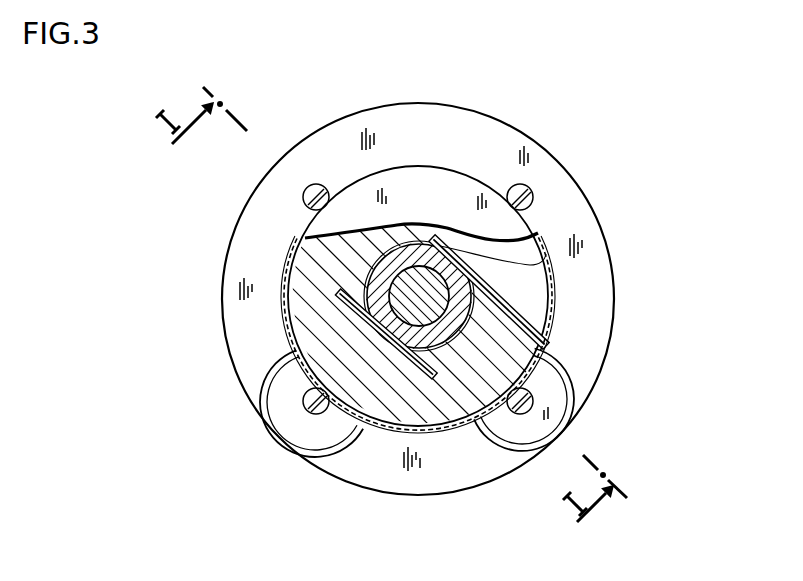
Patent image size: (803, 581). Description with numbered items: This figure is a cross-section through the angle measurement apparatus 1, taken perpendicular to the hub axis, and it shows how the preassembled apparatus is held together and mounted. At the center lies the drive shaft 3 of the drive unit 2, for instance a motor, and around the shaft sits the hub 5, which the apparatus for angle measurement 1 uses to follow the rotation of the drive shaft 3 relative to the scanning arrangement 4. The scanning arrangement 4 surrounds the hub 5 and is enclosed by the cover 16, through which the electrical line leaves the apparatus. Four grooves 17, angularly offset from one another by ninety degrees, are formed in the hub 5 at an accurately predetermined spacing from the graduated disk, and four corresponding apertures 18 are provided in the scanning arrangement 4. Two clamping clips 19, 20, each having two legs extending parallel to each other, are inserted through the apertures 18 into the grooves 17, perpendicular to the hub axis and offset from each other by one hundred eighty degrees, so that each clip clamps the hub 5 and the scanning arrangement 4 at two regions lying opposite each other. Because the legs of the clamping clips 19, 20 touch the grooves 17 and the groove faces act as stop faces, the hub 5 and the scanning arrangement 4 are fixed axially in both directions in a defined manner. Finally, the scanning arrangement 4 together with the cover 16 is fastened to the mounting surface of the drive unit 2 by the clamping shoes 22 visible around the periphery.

The apparatus for angle measurement 1 is at (585, 264).
The drive unit 2 is at (590, 293).
The drive shaft 3 is at (437, 298).
The scanning arrangement 4 is at (488, 300).
The hub 5 is at (447, 400).
The cover 16 is at (572, 384).
The grooves 17 is at (548, 243).
The apertures 18 is at (535, 258).
The clamping clip 19 is at (258, 388).
The clamping clip 20 is at (530, 452).
The clamping shoes 22 is at (316, 184).